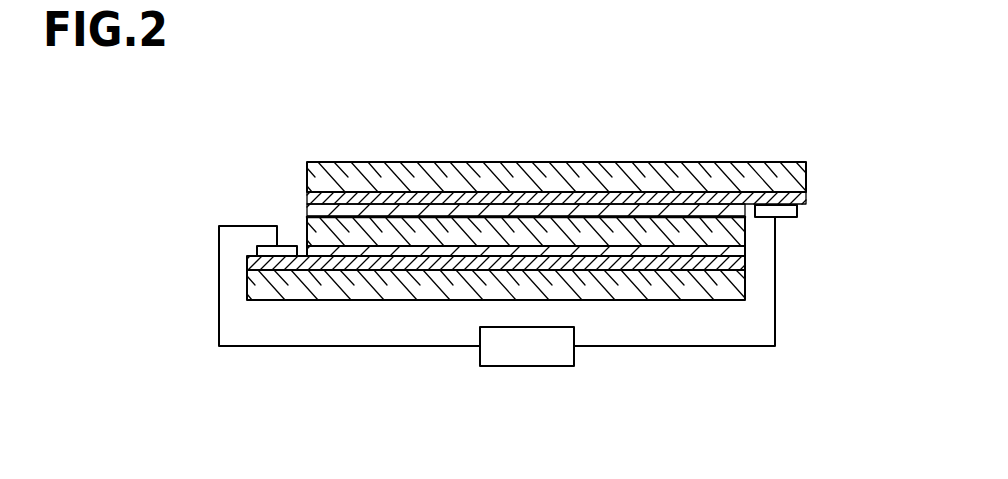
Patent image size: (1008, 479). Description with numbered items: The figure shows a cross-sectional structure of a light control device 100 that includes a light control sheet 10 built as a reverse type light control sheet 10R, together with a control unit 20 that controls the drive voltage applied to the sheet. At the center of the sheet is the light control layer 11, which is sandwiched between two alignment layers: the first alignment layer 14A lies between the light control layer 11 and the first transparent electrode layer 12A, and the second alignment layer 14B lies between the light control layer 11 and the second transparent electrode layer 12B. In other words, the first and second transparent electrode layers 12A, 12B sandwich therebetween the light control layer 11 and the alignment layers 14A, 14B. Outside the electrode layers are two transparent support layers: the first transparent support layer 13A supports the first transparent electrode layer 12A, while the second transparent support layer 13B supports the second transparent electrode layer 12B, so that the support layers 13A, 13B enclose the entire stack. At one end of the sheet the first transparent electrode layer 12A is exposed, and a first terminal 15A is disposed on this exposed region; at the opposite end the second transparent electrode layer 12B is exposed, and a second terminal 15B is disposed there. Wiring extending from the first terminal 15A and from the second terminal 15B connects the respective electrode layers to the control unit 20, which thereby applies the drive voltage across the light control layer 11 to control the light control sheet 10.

The light control device 100 is at (276, 132).
The light control sheet 10 is at (518, 204).
The reverse type light control sheet 10R is at (741, 143).
The light control layer 11 is at (307, 220).
The first transparent electrode layer 12A is at (806, 199).
The second transparent electrode layer 12B is at (252, 262).
The first transparent support layer 13A is at (799, 177).
The second transparent support layer 13B is at (253, 292).
The first alignment layer 14A is at (748, 208).
The second alignment layer 14B is at (307, 253).
The first terminal 15A is at (800, 220).
The second terminal 15B is at (257, 250).
The control unit 20 is at (574, 356).